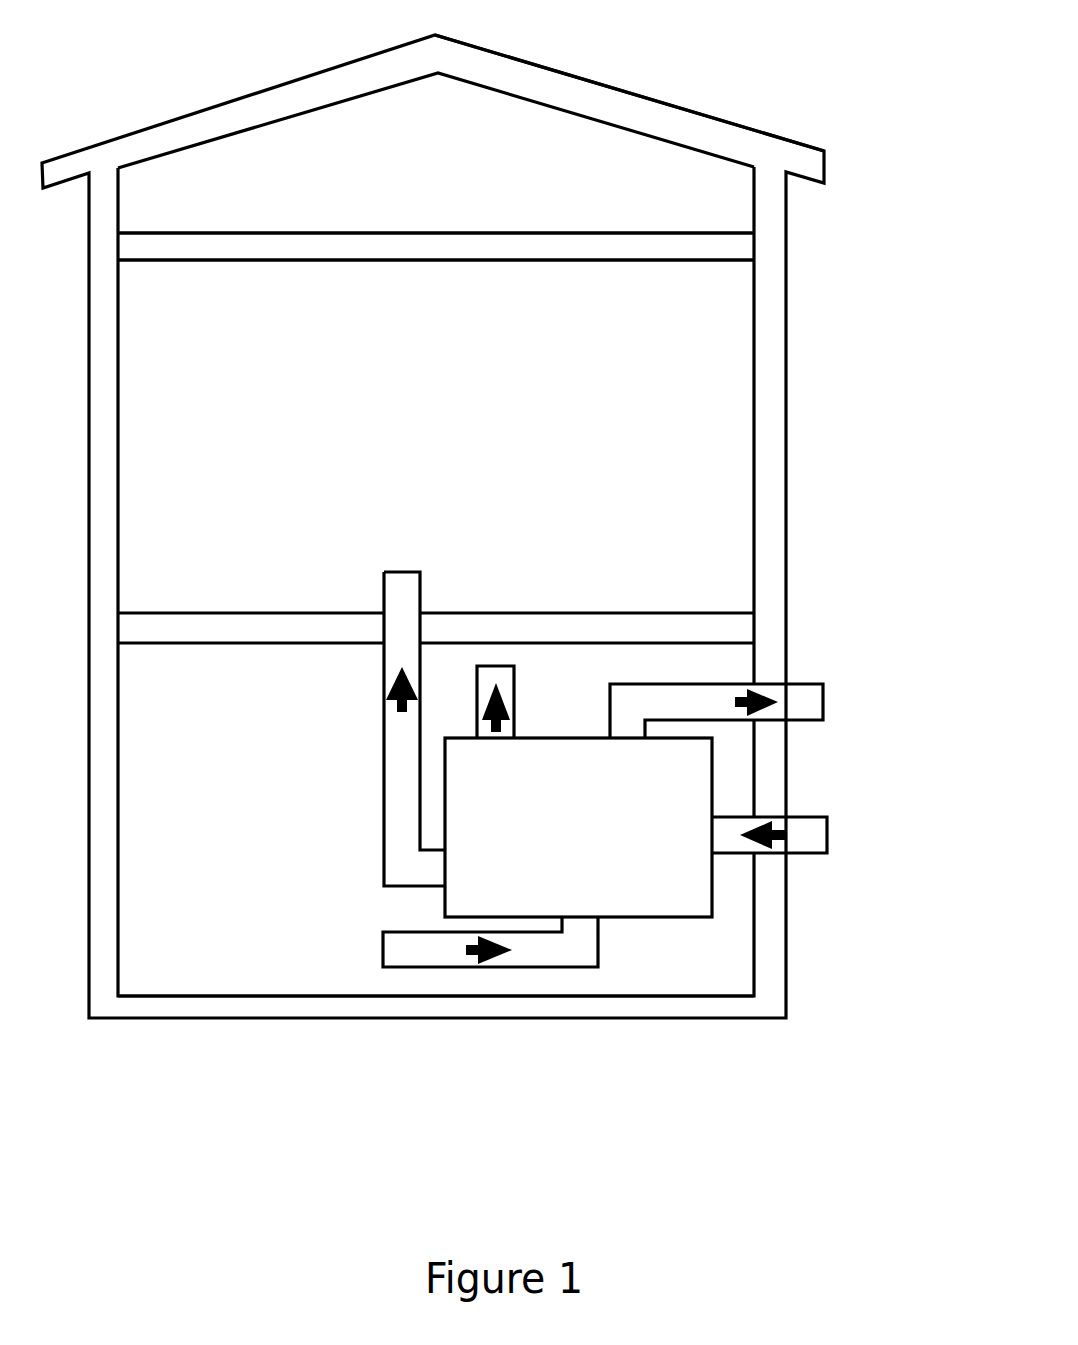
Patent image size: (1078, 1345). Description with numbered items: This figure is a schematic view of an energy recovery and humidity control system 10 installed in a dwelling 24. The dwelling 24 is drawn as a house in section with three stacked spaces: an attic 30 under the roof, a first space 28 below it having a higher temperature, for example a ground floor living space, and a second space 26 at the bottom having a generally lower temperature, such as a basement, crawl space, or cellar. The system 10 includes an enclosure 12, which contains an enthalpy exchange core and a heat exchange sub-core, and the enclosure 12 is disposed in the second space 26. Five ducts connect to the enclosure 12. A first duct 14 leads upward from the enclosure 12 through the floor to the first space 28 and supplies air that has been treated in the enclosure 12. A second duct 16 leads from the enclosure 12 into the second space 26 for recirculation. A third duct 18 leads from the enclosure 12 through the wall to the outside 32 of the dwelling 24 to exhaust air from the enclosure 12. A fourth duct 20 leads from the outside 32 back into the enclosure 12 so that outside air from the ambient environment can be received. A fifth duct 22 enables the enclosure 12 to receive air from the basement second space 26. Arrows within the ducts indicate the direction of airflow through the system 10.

The energy recovery and humidity control system 10 is at (828, 602).
The enclosure 12 is at (588, 840).
The first duct 14 is at (421, 590).
The second duct 16 is at (517, 692).
The third duct 18 is at (815, 684).
The fourth duct 20 is at (807, 855).
The fifth duct 22 is at (390, 932).
The dwelling 24 is at (652, 113).
The second space 26 is at (258, 745).
The first space 28 is at (245, 427).
The attic 30 is at (445, 193).
The outside 32 is at (856, 758).